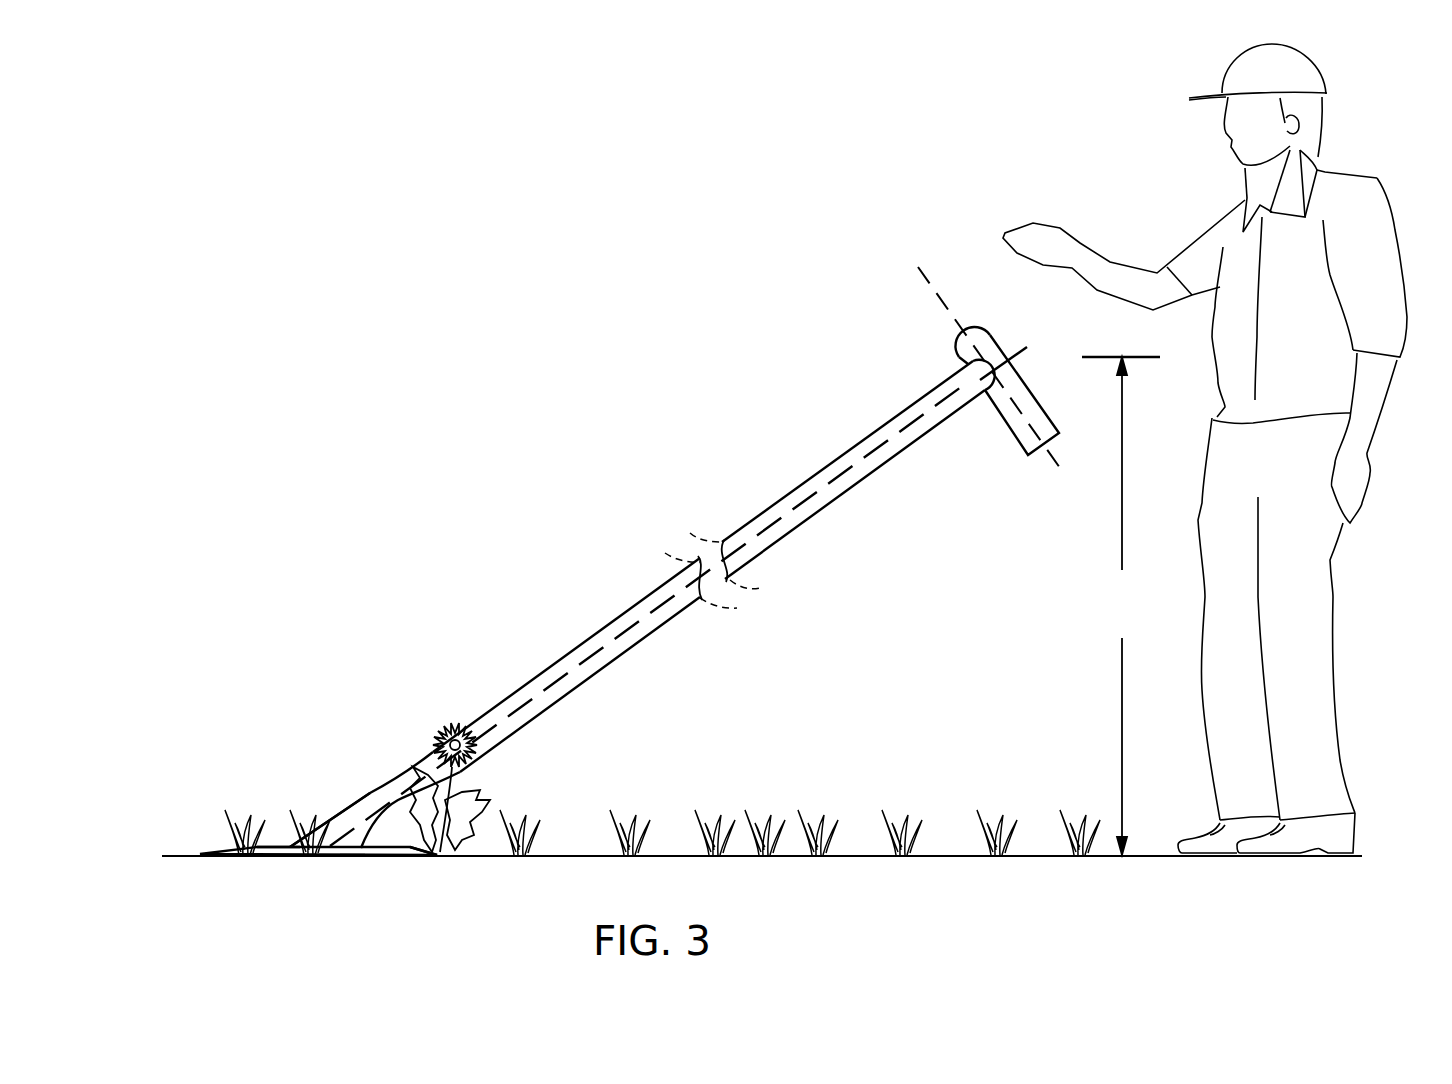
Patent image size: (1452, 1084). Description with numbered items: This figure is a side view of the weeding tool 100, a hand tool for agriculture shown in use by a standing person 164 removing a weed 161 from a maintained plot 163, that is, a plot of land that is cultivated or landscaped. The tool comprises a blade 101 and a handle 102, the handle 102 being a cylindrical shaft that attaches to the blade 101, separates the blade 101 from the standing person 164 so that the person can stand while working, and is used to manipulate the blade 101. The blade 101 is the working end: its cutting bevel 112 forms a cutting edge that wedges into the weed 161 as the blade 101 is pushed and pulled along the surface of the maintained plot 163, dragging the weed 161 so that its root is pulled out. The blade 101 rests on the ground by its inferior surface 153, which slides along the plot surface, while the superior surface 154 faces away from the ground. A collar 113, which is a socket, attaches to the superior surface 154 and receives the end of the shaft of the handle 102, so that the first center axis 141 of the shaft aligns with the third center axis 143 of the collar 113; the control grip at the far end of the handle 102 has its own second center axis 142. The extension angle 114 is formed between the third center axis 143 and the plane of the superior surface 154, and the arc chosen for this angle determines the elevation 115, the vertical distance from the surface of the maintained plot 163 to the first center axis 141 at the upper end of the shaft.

The weeding tool 100 is at (440, 376).
The blade 101 is at (250, 797).
The handle 102 is at (760, 462).
The cutting bevel 112 is at (428, 856).
The collar 113 is at (416, 766).
The extension angle 114 is at (362, 856).
The elevation 115 is at (1121, 606).
The first center axis 141 is at (852, 472).
The second center axis 142 is at (940, 298).
The third center axis 143 is at (354, 820).
The inferior surface 153 is at (267, 857).
The superior surface 154 is at (280, 847).
The weed 161 is at (463, 783).
The maintained plot 163 is at (763, 852).
The standing person 164 is at (1362, 180).